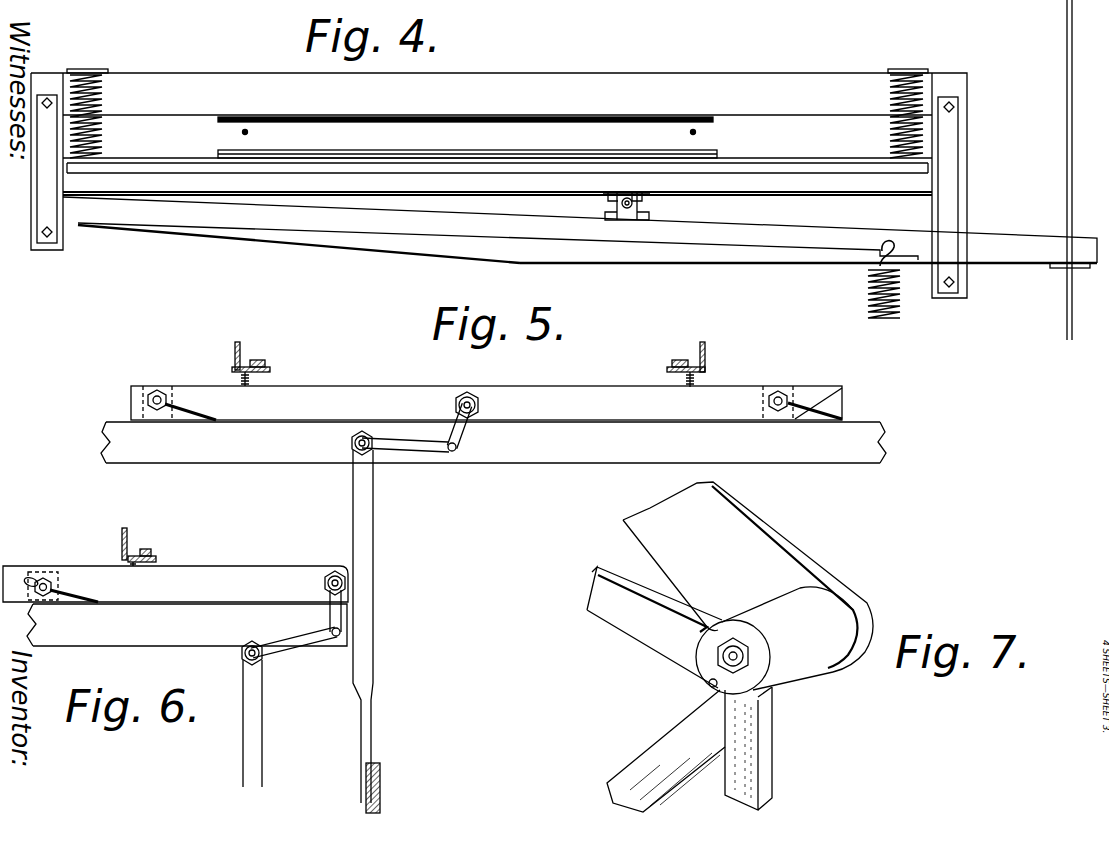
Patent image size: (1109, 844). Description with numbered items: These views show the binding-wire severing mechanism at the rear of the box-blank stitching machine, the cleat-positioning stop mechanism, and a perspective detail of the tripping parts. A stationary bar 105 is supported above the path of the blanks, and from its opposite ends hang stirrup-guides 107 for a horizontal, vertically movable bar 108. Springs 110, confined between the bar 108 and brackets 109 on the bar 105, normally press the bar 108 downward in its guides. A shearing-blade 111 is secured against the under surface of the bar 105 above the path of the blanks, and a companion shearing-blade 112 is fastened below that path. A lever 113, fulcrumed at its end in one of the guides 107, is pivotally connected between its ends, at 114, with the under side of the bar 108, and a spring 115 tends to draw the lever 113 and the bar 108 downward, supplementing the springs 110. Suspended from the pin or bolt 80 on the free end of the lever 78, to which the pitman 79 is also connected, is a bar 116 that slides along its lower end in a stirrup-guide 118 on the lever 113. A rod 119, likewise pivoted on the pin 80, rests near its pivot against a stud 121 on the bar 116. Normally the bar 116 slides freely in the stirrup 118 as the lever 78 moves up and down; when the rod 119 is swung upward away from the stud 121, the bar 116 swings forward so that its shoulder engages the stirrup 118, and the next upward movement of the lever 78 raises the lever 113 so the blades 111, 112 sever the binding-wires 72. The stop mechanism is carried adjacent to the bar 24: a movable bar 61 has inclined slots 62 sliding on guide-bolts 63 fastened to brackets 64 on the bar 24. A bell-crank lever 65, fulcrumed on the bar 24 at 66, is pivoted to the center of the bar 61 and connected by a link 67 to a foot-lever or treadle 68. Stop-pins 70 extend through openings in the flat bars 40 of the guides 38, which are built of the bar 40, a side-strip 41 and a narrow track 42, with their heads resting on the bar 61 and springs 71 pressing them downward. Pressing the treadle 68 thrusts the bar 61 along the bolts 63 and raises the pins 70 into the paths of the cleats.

In FIG. 5, the bar 24 is at (493, 442).
In FIG. 6, the bar 24 is at (187, 625).
In FIG. 5, the upper parallel guides 38 is at (690, 367).
In FIG. 6, the upper parallel guides 38 is at (108, 541).
In FIG. 5, the flat bar 40 is at (272, 369).
In FIG. 6, the flat bar 40 is at (158, 559).
In FIG. 5, the side-strip 41 is at (240, 343).
In FIG. 6, the side-strip 41 is at (124, 528).
In FIG. 5, the narrow strip or track 42 is at (262, 361).
In FIG. 6, the narrow strip or track 42 is at (152, 550).
In FIG. 5, the movable bar 61 is at (486, 403).
In FIG. 6, the movable bar 61 is at (175, 584).
In FIG. 5, the inclined slots 62 is at (200, 418).
In FIG. 6, the inclined slots 62 is at (70, 596).
In FIG. 5, the guide-bolts 63 is at (152, 393).
In FIG. 6, the guide-bolts 63 is at (42, 584).
In FIG. 5, the brackets 64 is at (131, 407).
In FIG. 6, the brackets 64 is at (44, 601).
In FIG. 5, the bell-crank lever 65 is at (428, 456).
In FIG. 6, the bell-crank lever 65 is at (300, 646).
In FIG. 5, the fulcrum 66 is at (458, 447).
In FIG. 6, the fulcrum 66 is at (343, 632).
In FIG. 5, the link 67 is at (374, 578).
In FIG. 6, the link 67 is at (256, 740).
In FIG. 5, the foot-lever or treadle 68 is at (381, 778).
In FIG. 5, the stop-pins 70 is at (468, 339).
In FIG. 6, the stop-pins 70 is at (158, 541).
In FIG. 5, the springs 71 is at (238, 380).
In FIG. 6, the springs 71 is at (140, 566).
In FIG. 4, the binding-wires 72 is at (247, 132).
In FIG. 7, the lever 78 is at (785, 533).
In FIG. 7, the pitman 79 is at (661, 751).
In FIG. 7, the pin or bolt 80 is at (716, 660).
In FIG. 4, the stationary bar 105 is at (500, 73).
In FIG. 4, the stirrup-guides 107 is at (40, 245).
In FIG. 4, the horizontal vertically movable bar 108 is at (797, 184).
In FIG. 4, the brackets 109 is at (100, 70).
In FIG. 4, the springs 110 is at (104, 130).
In FIG. 4, the shearing-blade 111 is at (318, 106).
In FIG. 4, the companion shearing-blade 112 is at (358, 143).
In FIG. 4, the lever 113 is at (445, 232).
In FIG. 4, the pivotal connection 114 is at (652, 206).
In FIG. 4, the spring 115 is at (867, 294).
In FIG. 4, the bar 116 is at (1066, 188).
In FIG. 7, the bar 116 is at (760, 755).
In FIG. 4, the stirrup-guide 118 is at (1052, 268).
In FIG. 7, the rod 119 is at (603, 612).
In FIG. 7, the stud 121 is at (708, 684).